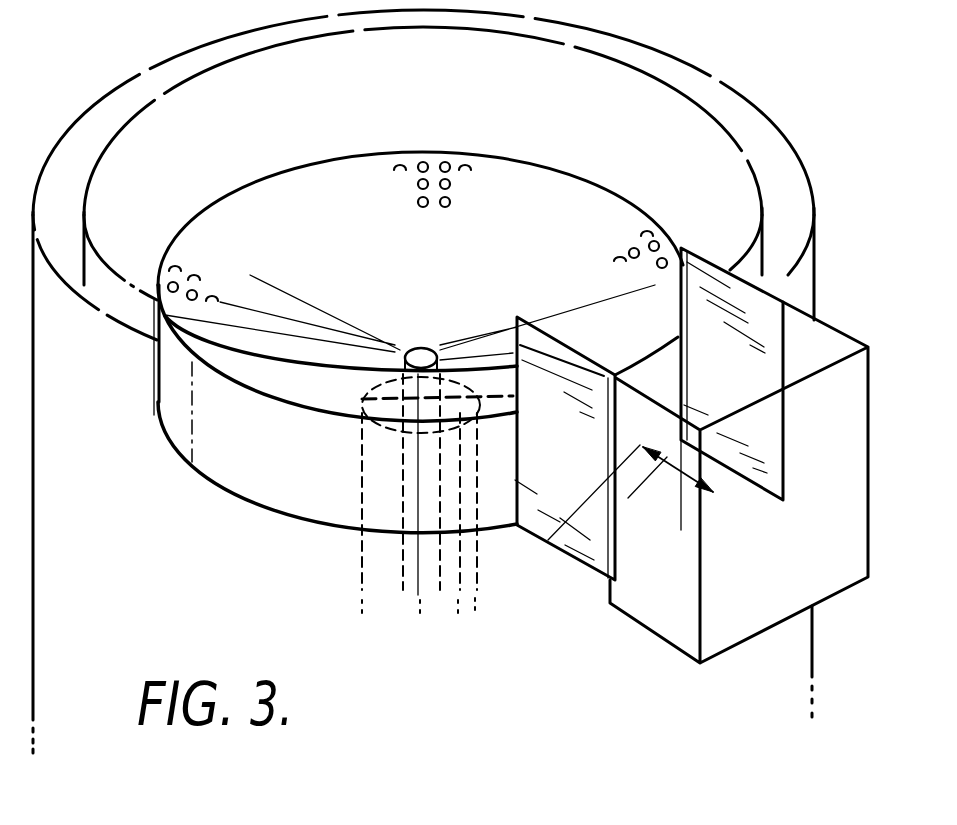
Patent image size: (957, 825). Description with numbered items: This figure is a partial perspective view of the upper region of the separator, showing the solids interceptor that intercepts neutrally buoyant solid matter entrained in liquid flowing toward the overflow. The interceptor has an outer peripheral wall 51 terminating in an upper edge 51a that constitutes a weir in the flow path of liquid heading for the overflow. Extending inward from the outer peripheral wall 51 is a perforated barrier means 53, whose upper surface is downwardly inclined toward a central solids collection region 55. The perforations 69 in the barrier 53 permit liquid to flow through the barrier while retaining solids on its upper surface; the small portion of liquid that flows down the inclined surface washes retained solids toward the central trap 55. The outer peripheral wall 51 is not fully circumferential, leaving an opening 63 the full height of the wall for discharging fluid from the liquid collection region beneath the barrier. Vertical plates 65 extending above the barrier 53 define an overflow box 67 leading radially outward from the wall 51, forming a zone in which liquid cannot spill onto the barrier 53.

The outer peripheral wall 51 is at (178, 380).
The upper edge 51a is at (245, 187).
The perforated barrier means 53 is at (570, 187).
The central solids collection region 55 is at (424, 351).
The opening 63 is at (553, 540).
The vertical plates 65 is at (730, 368).
The overflow box 67 is at (680, 443).
The perforations 69 is at (430, 167).